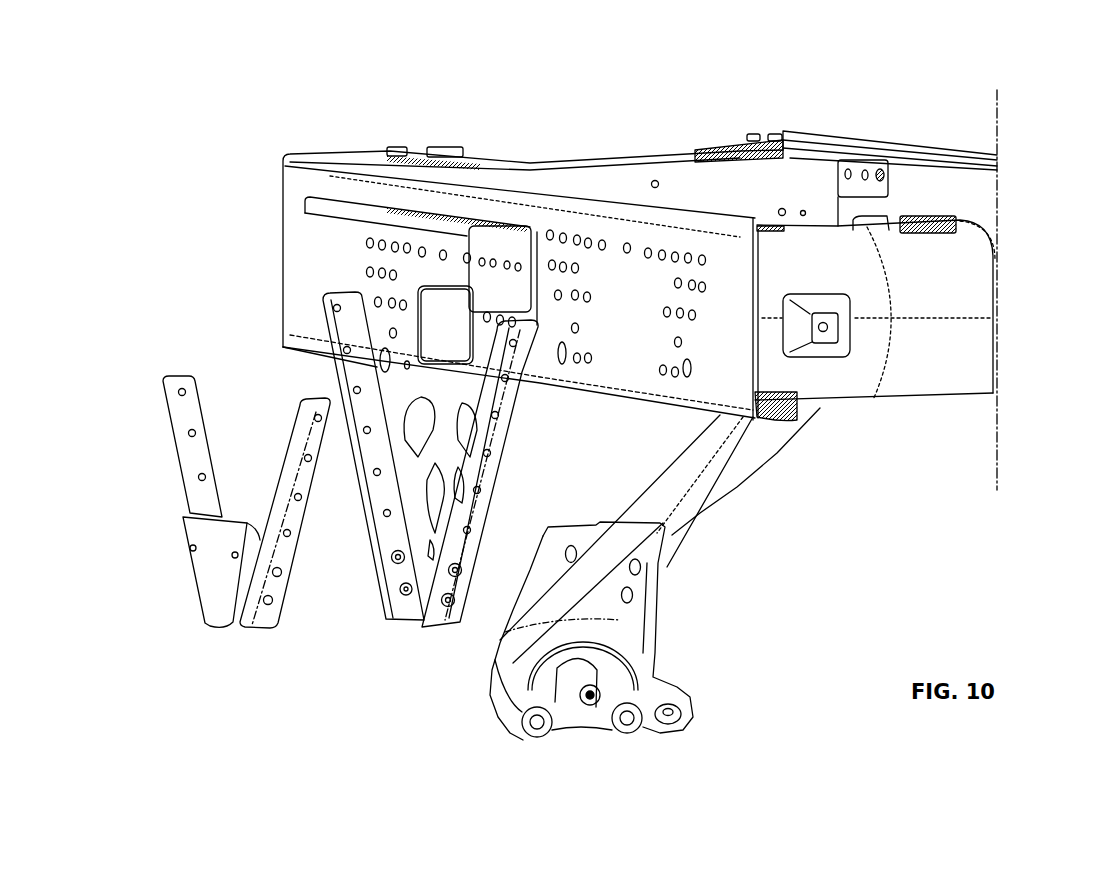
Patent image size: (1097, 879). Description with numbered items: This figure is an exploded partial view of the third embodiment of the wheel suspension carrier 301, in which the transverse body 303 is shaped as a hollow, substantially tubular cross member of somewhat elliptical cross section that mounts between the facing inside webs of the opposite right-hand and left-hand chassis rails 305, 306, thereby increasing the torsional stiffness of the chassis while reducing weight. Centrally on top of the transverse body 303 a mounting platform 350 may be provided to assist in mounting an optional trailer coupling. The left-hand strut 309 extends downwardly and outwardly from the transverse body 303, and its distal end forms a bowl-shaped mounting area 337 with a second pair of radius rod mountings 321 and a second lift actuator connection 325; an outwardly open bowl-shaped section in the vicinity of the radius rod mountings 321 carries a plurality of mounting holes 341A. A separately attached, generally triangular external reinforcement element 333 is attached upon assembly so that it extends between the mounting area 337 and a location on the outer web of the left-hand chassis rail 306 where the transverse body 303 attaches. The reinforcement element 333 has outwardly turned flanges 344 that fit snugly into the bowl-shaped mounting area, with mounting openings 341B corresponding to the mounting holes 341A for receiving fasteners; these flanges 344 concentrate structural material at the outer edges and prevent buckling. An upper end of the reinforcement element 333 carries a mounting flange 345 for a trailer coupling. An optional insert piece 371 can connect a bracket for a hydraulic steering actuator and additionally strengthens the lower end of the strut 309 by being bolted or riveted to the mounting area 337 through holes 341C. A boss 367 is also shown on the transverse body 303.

The wheel suspension carrier 301 is at (956, 404).
The transverse body 303 is at (958, 335).
The right-hand chassis rail 305 is at (938, 187).
The left-hand chassis rail 306 is at (312, 256).
The left-hand strut 309 is at (713, 487).
The second pair of radius rod mountings 321 is at (620, 735).
The second lift actuator connection 325 is at (683, 715).
The external reinforcement element 333 is at (380, 330).
The mounting area 337 is at (618, 638).
The mounting holes 341A is at (571, 546).
The mounting openings 341B is at (398, 564).
The holes 341C is at (268, 604).
The outwardly turned flanges 344 is at (348, 372).
The mounting flange 345 is at (410, 215).
The mounting platform 350 is at (922, 215).
The boss 367 is at (828, 345).
The insert piece 371 is at (215, 583).